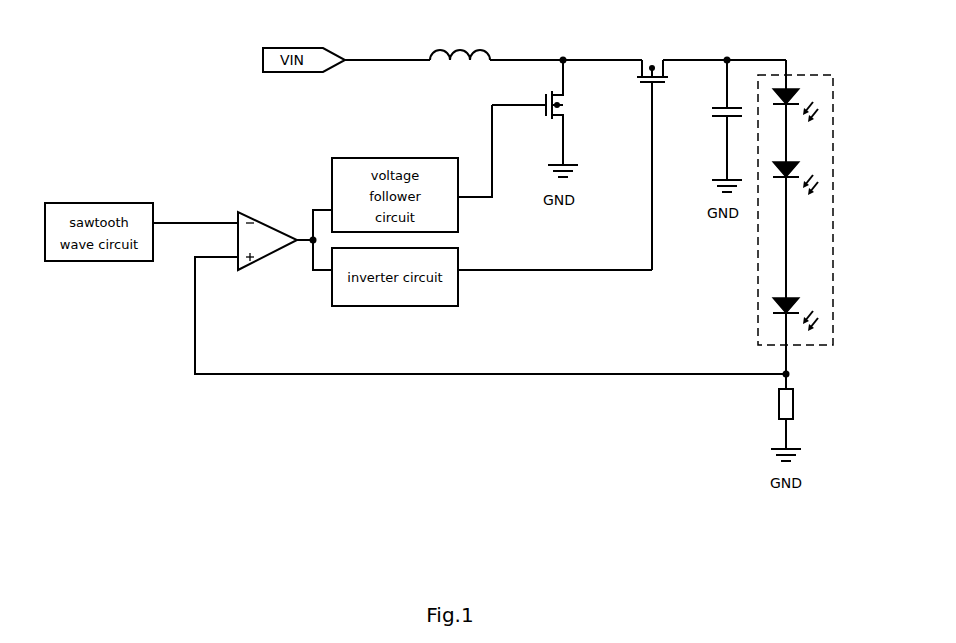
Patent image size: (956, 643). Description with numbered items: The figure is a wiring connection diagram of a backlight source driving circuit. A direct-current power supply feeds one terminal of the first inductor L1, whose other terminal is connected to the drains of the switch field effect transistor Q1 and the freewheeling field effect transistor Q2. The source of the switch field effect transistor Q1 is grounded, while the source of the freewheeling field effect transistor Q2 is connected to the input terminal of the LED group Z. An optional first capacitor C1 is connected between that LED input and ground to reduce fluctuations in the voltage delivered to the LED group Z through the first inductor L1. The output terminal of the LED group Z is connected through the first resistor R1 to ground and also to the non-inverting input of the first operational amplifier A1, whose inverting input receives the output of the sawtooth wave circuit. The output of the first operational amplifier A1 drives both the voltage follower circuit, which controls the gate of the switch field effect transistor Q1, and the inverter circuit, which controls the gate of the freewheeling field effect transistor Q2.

The first inductor L1 is at (460, 44).
The switch field effect transistor Q1 is at (550, 112).
The freewheeling field effect transistor Q2 is at (644, 165).
The first capacitor C1 is at (710, 120).
The LED group Z is at (795, 207).
The first resistor R1 is at (769, 411).
The first operational amplifier A1 is at (275, 229).